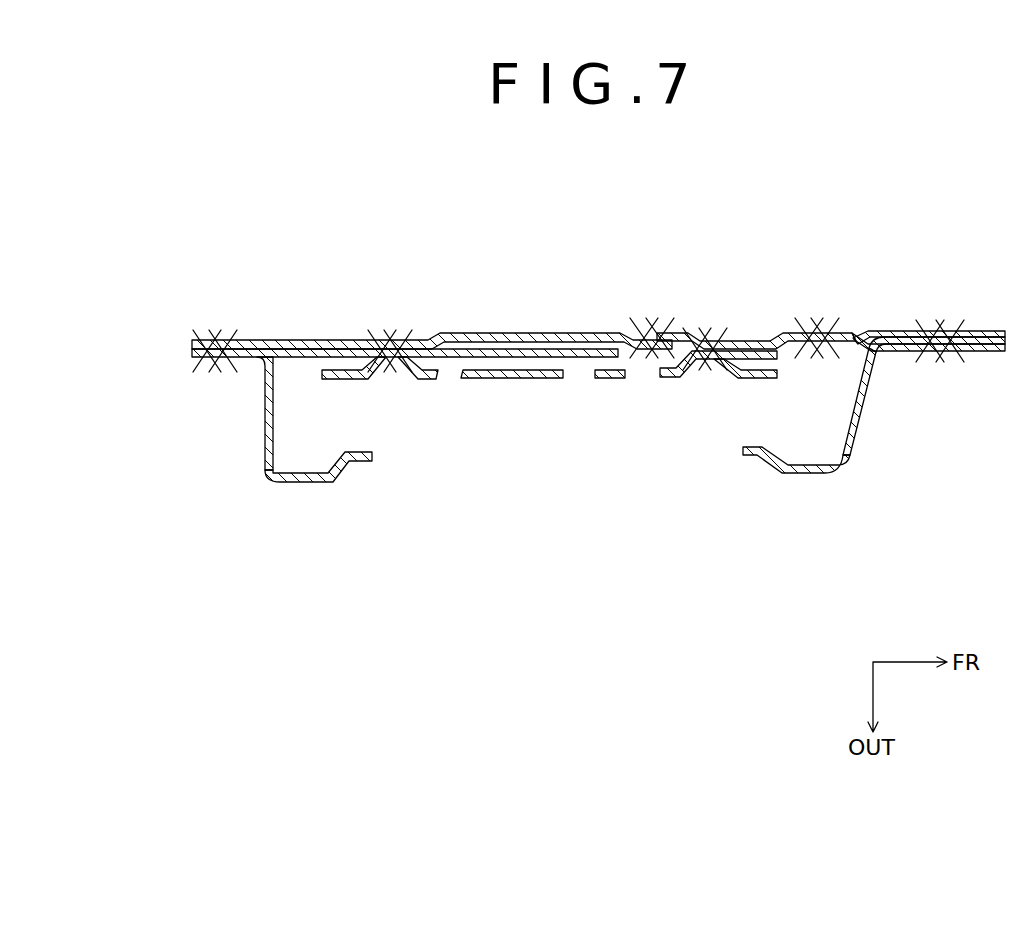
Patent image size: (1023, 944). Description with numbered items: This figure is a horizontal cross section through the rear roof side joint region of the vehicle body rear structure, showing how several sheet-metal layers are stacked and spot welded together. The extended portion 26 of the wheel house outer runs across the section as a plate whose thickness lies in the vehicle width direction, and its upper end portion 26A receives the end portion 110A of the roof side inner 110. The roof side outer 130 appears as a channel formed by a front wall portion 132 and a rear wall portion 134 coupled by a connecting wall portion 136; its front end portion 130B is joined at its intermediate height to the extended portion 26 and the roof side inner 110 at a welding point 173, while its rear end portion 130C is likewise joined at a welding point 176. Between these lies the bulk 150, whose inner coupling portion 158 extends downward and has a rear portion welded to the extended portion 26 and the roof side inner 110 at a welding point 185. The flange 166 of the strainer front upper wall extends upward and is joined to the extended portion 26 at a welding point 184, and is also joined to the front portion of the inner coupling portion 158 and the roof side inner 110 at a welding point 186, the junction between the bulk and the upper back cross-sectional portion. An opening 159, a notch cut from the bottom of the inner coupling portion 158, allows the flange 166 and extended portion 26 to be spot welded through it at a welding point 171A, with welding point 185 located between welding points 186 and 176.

The extended portion 26 is at (555, 333).
The upper end portion 26A is at (973, 330).
The roof side inner 110 is at (975, 353).
The end portion 110A is at (740, 378).
The roof side outer 130 is at (874, 449).
The front end portion 130B is at (925, 350).
The rear end portion 130C is at (222, 368).
The front wall portion 132 is at (855, 438).
The rear wall portion 134 is at (263, 425).
The connecting wall portion 136 is at (307, 482).
The bulk 150 is at (526, 382).
The inner coupling portion 158 is at (752, 378).
The opening 159 is at (621, 382).
The flange 166 is at (750, 338).
The welding point 171A is at (646, 330).
The welding point 173 is at (918, 330).
The welding point 176 is at (232, 340).
The welding point 184 is at (818, 333).
The welding point 185 is at (396, 378).
The welding point 186 is at (722, 370).